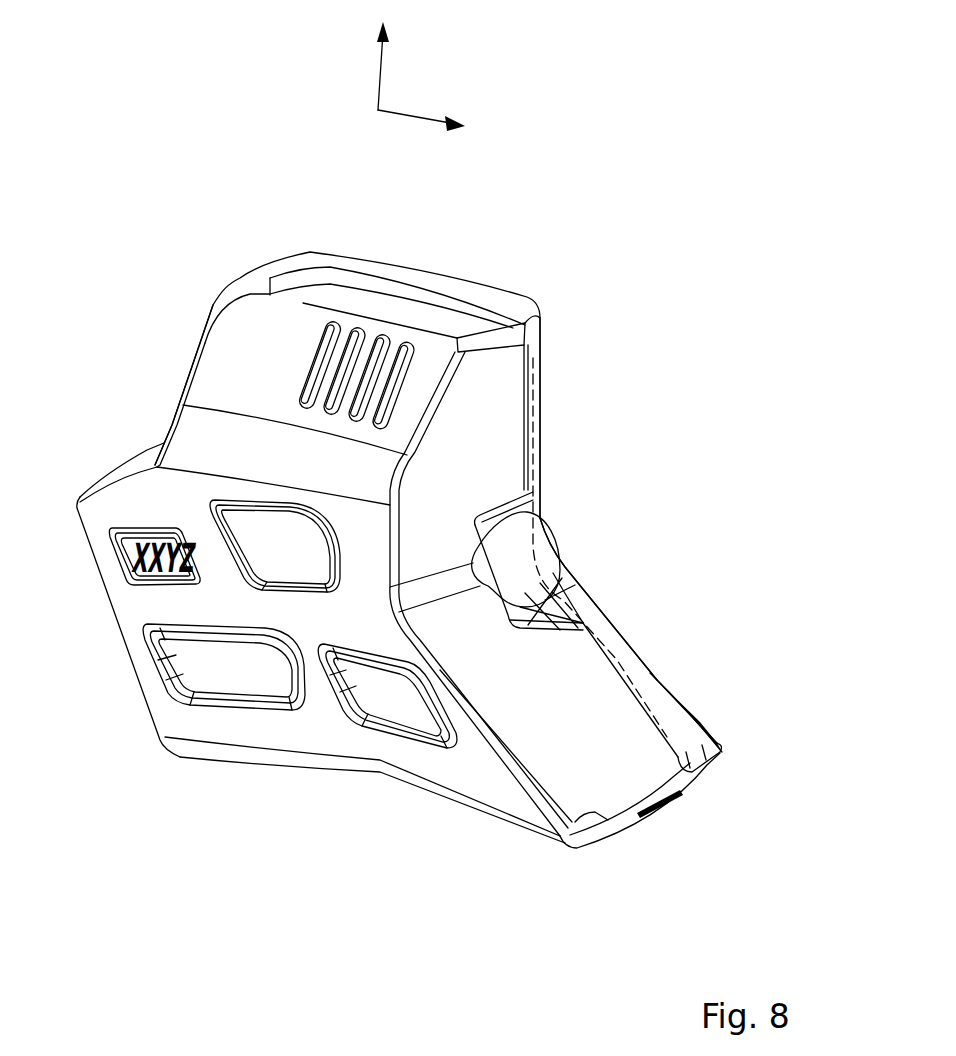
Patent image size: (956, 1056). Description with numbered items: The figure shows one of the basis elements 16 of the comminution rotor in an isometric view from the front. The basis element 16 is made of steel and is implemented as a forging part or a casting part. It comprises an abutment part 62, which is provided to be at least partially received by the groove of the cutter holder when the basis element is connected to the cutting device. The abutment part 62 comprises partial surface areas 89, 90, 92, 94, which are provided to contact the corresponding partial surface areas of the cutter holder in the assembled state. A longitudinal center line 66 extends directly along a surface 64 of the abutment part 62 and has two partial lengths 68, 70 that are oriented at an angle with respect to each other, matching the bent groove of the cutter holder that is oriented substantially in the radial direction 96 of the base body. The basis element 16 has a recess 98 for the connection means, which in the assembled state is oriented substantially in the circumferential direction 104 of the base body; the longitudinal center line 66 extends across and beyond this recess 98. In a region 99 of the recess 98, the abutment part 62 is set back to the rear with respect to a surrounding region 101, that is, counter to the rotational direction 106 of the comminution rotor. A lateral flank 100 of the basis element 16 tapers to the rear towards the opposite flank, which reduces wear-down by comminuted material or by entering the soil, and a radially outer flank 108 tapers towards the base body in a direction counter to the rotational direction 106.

The basis element 16 is at (228, 323).
The abutment part 62 is at (502, 360).
The surface 64 is at (475, 378).
The longitudinal center line 66 is at (533, 370).
The partial length 68 is at (534, 397).
The partial length 70 is at (597, 643).
The partial surface area 89 is at (451, 425).
The partial surface area 90 is at (547, 315).
The partial surface area 92 is at (547, 728).
The partial surface area 94 is at (652, 687).
The radial direction 96 is at (380, 70).
The recess 98 is at (515, 545).
The region 99 is at (575, 543).
The lateral flank 100 is at (232, 361).
The surrounding region 101 is at (655, 637).
The circumferential direction 104 is at (477, 74).
The rotational direction 106 is at (416, 115).
The radially outer flank 108 is at (222, 281).